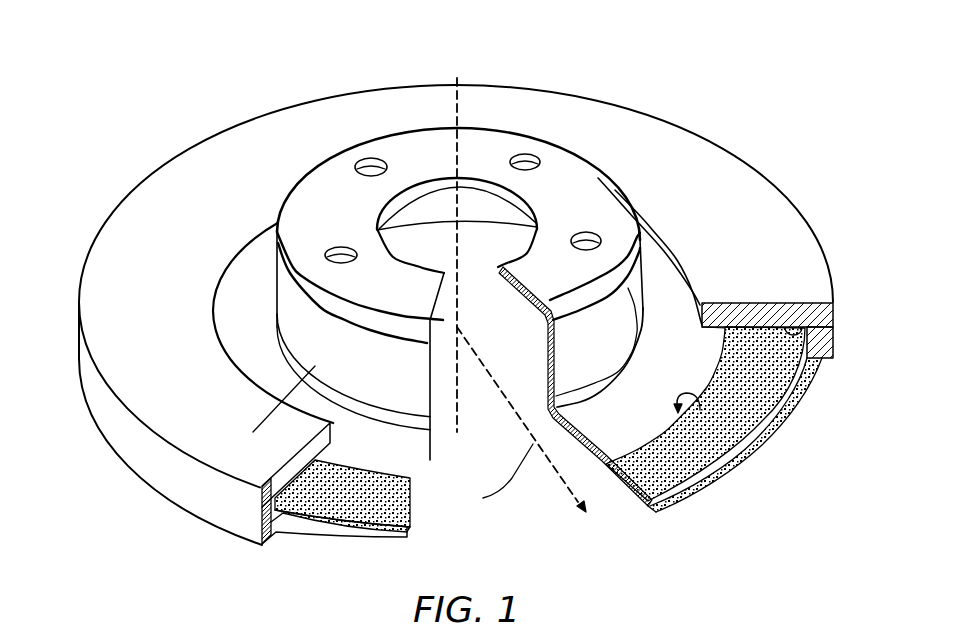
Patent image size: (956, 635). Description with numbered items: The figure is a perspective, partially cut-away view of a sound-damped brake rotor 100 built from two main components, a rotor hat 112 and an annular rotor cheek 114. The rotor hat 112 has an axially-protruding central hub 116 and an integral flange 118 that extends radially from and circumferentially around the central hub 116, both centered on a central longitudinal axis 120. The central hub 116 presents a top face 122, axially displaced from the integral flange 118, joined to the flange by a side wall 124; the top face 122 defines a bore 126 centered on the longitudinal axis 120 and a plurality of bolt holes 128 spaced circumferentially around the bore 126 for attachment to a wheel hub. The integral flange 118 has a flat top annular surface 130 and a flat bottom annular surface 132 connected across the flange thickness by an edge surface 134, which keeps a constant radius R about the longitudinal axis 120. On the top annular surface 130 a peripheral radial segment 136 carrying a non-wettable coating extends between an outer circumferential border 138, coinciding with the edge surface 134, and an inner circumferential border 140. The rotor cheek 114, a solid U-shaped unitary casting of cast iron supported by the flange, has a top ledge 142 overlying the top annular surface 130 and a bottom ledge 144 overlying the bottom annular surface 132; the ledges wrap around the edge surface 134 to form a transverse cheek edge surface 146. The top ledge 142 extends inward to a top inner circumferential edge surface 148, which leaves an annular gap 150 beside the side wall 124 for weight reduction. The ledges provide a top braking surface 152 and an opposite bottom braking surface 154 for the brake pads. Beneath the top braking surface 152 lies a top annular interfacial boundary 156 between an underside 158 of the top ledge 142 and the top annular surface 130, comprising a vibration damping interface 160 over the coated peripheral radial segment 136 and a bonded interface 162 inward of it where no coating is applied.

The brake rotor 100 is at (160, 124).
The rotor hat 112 is at (270, 260).
The annular rotor cheek 114 is at (78, 302).
The central hub 116 is at (333, 303).
The integral flange 118 is at (405, 458).
The central longitudinal axis 120 is at (458, 75).
The top face 122 is at (327, 213).
The side wall 124 is at (258, 488).
The bore 126 is at (523, 207).
The bolt holes 128 is at (366, 160).
The top annular surface 130 is at (575, 450).
The bottom annular surface 132 is at (600, 470).
The edge surface 134 is at (678, 494).
The peripheral radial segment 136 is at (712, 474).
The outer circumferential border 138 is at (775, 412).
The inner circumferential border 140 is at (740, 435).
The top ledge 142 is at (262, 530).
The bottom ledge 144 is at (286, 516).
The transverse cheek edge surface 146 is at (258, 513).
The top inner circumferential edge surface 148 is at (227, 271).
The annular gap 150 is at (260, 316).
The top braking surface 152 is at (181, 412).
The bottom braking surface 154 is at (823, 368).
The top annular interfacial boundary 156 is at (763, 340).
The underside 158 is at (745, 302).
The vibration damping interface 160 is at (818, 302).
The bonded interface 162 is at (688, 322).